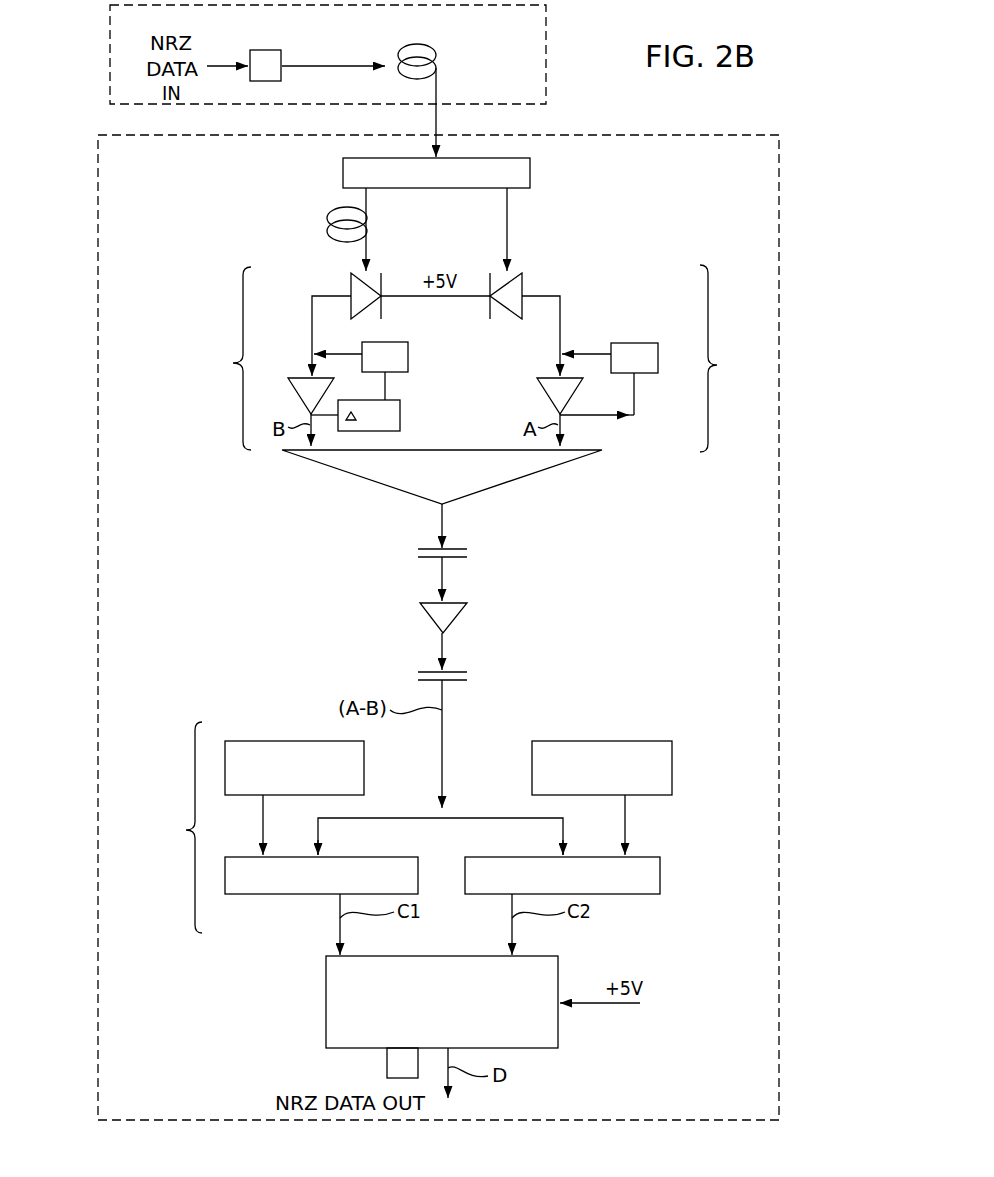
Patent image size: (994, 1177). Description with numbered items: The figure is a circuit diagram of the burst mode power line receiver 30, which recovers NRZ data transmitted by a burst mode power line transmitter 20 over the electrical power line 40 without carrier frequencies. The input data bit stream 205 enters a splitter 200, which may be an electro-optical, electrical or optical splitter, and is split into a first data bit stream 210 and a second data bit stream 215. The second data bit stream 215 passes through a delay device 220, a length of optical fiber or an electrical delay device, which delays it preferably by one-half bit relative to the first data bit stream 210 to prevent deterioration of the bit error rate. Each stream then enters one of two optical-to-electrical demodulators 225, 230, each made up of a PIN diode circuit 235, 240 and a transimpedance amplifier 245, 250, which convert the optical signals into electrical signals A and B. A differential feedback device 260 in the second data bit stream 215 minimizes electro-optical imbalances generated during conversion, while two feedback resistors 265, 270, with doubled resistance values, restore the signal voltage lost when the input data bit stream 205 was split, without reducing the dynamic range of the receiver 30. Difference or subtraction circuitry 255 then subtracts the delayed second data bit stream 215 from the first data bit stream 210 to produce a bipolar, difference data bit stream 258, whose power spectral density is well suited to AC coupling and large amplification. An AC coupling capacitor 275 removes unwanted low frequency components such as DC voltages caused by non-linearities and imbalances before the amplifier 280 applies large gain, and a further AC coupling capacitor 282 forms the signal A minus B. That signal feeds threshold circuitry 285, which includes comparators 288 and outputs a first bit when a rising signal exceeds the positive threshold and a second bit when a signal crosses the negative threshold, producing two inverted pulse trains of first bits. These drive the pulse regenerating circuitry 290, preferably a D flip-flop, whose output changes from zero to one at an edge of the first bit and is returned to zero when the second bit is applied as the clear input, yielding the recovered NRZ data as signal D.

The burst mode power line transmitter 20 is at (283, 57).
The electrical power line 40 is at (436, 50).
The input data bit stream 205 is at (436, 117).
The burst mode power line receiver 30 is at (98, 323).
The splitter 200 is at (530, 172).
The second data bit stream 215 is at (366, 198).
The first data bit stream 210 is at (507, 224).
The delay device 220 is at (325, 221).
The PIN diode circuit 235 is at (352, 290).
The PIN diode circuit 240 is at (524, 290).
The optical-to-electrical demodulator 225 is at (220, 358).
The optical-to-electrical demodulator 230 is at (731, 358).
The transimpedance amplifier 245 is at (300, 378).
The transimpedance amplifier 250 is at (549, 378).
The feedback resistor 265 is at (397, 373).
The differential feedback device 260 is at (400, 415).
The feedback resistor 270 is at (646, 373).
The difference or subtraction circuitry 255 is at (490, 491).
The bipolar, difference data bit stream 258 is at (442, 522).
The AC coupling capacitor 275 is at (408, 552).
The amplifier 280 is at (455, 618).
The AC coupling capacitor 282 is at (455, 684).
The threshold circuitry 285 is at (402, 837).
The comparators 288 is at (247, 894).
The pulse regenerating circuitry 290 is at (326, 1003).